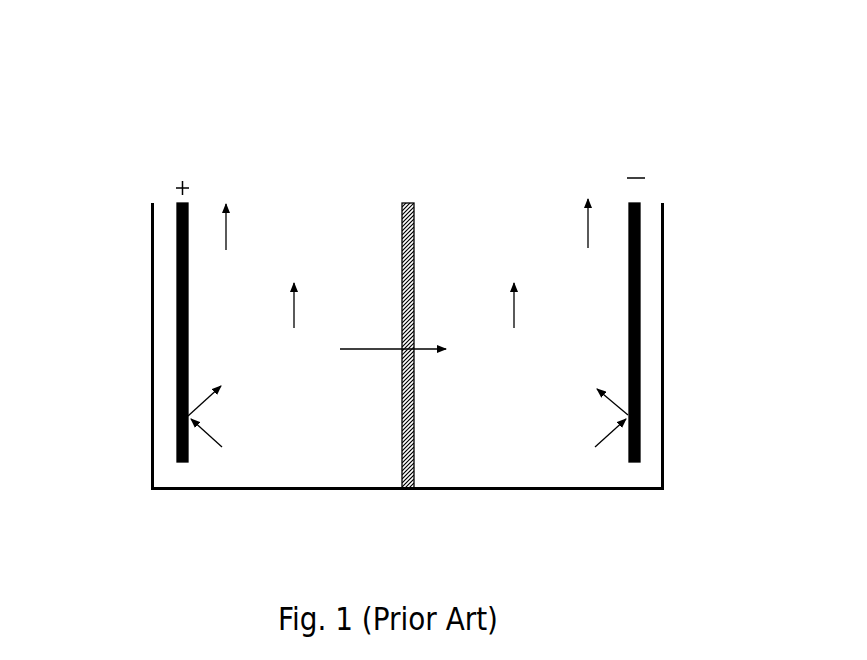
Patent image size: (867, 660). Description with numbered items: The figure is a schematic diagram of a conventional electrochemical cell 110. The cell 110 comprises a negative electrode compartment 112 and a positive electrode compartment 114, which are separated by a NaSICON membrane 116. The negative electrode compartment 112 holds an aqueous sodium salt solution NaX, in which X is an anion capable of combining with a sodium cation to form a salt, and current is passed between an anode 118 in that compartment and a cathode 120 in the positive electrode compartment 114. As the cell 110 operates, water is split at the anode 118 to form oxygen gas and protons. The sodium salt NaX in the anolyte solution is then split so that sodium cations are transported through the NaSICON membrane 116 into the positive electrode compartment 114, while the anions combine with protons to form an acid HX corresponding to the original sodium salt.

The electrochemical cell 110 is at (383, 106).
The negative electrode compartment 112 is at (366, 431).
The positive electrode compartment 114 is at (492, 431).
The NaSICON membrane 116 is at (411, 447).
The anode 118 is at (178, 377).
The cathode 120 is at (640, 378).